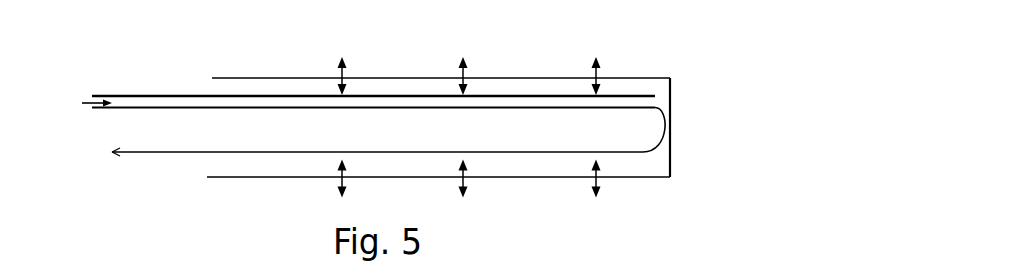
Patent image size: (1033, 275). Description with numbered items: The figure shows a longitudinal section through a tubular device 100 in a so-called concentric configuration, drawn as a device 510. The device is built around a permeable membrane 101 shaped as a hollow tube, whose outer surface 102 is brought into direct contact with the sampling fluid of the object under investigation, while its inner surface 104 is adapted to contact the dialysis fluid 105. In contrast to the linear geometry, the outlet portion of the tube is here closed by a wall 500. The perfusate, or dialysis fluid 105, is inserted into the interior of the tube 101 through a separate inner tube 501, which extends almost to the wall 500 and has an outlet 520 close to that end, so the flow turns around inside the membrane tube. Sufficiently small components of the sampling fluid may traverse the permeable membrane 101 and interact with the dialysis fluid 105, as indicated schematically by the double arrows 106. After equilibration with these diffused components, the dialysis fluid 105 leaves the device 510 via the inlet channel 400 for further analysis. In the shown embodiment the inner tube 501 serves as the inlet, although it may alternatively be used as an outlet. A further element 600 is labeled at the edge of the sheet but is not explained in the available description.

The device 100 is at (547, 53).
The permeable membrane 101 is at (554, 78).
The outer surface 102 is at (548, 178).
The inner surface 104 is at (627, 176).
The dialysis fluid 105 is at (86, 98).
The double arrows 106 is at (340, 70).
The inlet opening 400 is at (151, 130).
The wall 500 is at (671, 87).
The inner tube 501 is at (147, 95).
The device 510 is at (667, 48).
The outlet 520 is at (658, 108).
The next figure element 600 is at (687, 274).